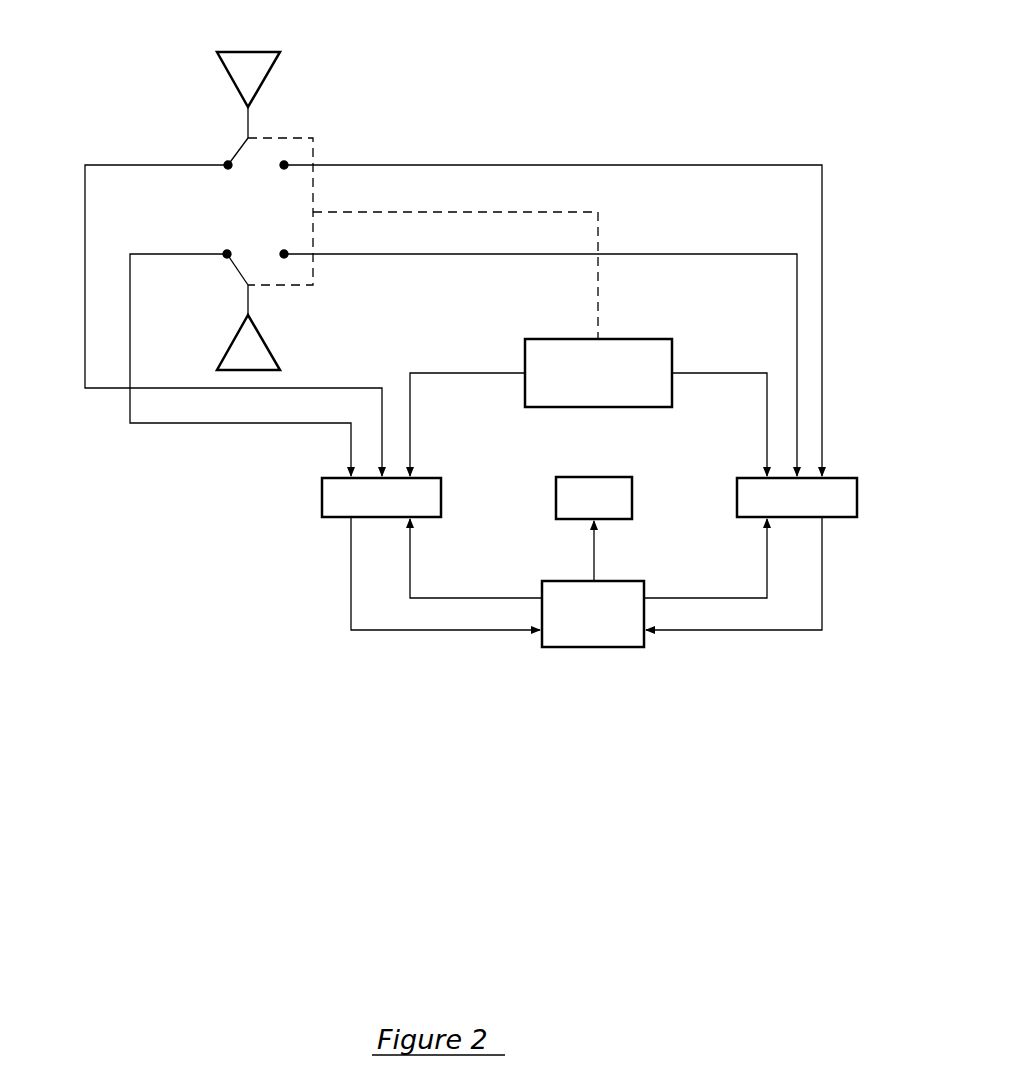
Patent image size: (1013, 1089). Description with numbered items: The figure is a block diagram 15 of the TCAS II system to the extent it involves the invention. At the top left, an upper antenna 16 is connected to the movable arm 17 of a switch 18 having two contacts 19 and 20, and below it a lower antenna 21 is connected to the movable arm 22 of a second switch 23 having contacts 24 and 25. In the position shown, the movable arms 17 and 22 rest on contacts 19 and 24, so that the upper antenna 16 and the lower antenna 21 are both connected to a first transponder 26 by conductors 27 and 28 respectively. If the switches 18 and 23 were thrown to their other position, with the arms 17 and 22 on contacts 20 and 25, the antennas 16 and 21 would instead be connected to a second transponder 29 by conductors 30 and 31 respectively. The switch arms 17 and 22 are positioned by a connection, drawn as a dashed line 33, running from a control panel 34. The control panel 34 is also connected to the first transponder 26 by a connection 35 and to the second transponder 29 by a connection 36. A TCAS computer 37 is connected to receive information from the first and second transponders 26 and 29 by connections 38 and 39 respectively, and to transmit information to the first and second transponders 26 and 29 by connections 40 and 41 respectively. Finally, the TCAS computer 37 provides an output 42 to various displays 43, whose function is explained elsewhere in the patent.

The block diagram 15 is at (484, 126).
The upper antenna 16 is at (266, 78).
The movable arm 17 is at (238, 153).
The switch 18 is at (188, 76).
The contact 19 is at (225, 168).
The contact 20 is at (282, 165).
The lower antenna 21 is at (262, 336).
The movable arm 22 is at (237, 272).
The switch 23 is at (278, 298).
The contact 24 is at (226, 252).
The contact 25 is at (284, 252).
The first transponder 26 is at (322, 492).
The conductor 27 is at (85, 276).
The conductor 28 is at (262, 428).
The second transponder 29 is at (857, 497).
The conductor 30 is at (668, 165).
The conductor 31 is at (668, 254).
The connection 33 is at (470, 214).
The control panel 34 is at (617, 338).
The connection 35 is at (410, 400).
The connection 36 is at (767, 400).
The TCAS computer 37 is at (592, 648).
The connection 38 is at (351, 573).
The connection 39 is at (822, 573).
The connection 40 is at (410, 567).
The connection 41 is at (767, 555).
The output 42 is at (594, 566).
The displays 43 is at (592, 476).